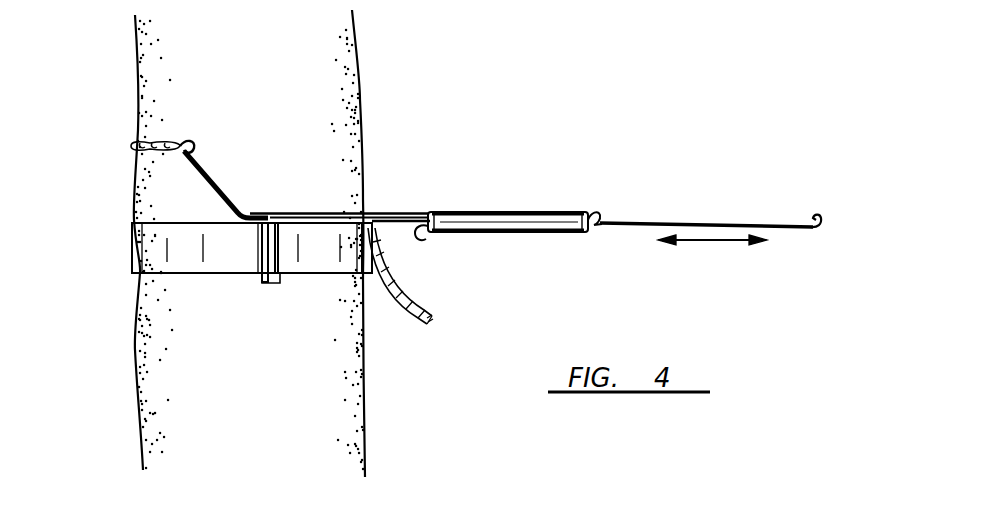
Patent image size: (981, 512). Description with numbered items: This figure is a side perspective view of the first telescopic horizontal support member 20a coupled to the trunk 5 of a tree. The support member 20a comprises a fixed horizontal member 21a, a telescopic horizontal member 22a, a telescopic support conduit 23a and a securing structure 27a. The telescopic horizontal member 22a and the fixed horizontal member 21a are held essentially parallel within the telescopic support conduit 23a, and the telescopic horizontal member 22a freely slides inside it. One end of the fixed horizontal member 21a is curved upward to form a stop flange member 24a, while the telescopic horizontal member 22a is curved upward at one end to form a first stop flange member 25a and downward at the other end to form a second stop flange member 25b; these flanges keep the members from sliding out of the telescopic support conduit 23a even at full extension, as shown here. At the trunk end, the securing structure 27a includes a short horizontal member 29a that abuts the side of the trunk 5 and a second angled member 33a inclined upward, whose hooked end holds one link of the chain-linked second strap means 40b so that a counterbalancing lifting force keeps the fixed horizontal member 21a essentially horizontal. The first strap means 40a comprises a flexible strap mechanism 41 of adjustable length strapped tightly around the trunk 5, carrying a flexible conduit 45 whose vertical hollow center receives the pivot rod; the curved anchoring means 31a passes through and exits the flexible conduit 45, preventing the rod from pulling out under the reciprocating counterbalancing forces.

The trunk 5 is at (333, 363).
The first telescopic horizontal support member 20a is at (502, 167).
The fixed horizontal member 21a is at (374, 216).
The telescopic horizontal member 22a is at (632, 220).
The telescopic support conduit 23a is at (513, 219).
The stop flange member 24a is at (598, 212).
The first stop flange member 25a is at (823, 217).
The second stop flange member 25b is at (425, 240).
The securing structure 27a is at (290, 216).
The short horizontal member 29a is at (266, 214).
The anchoring means 31a is at (264, 283).
The second angled member 33a is at (217, 183).
The first strap means 40a is at (182, 247).
The second strap means 40b is at (130, 144).
The flexible strap mechanism 41 is at (330, 262).
The flexible conduit 45 is at (263, 255).